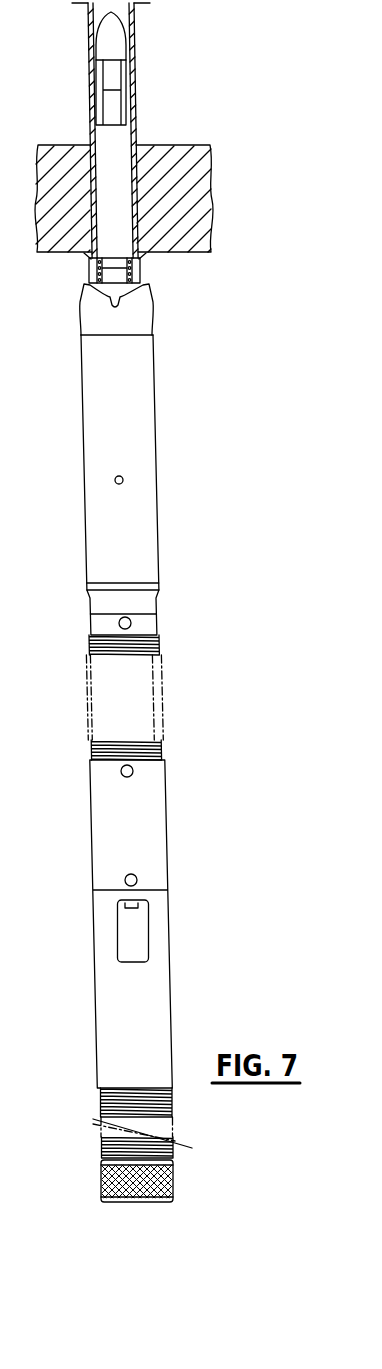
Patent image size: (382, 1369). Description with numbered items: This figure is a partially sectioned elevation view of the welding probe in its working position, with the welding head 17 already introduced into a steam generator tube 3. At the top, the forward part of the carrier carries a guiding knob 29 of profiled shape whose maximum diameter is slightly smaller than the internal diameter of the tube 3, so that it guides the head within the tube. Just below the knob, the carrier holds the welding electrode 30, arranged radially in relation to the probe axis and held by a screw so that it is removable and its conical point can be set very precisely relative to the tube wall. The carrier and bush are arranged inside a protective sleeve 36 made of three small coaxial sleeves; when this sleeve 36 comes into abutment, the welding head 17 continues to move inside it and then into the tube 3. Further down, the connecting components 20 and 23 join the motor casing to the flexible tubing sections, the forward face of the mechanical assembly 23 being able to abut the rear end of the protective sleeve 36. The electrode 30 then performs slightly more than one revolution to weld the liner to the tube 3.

The steam generator tube 3 is at (137, 134).
The guiding knob 29 is at (118, 42).
The welding electrode 30 is at (122, 90).
The welding head 17 is at (140, 442).
The protective sleeve 36 is at (138, 562).
The connecting component 23 is at (150, 627).
The connecting component 20 is at (173, 1186).